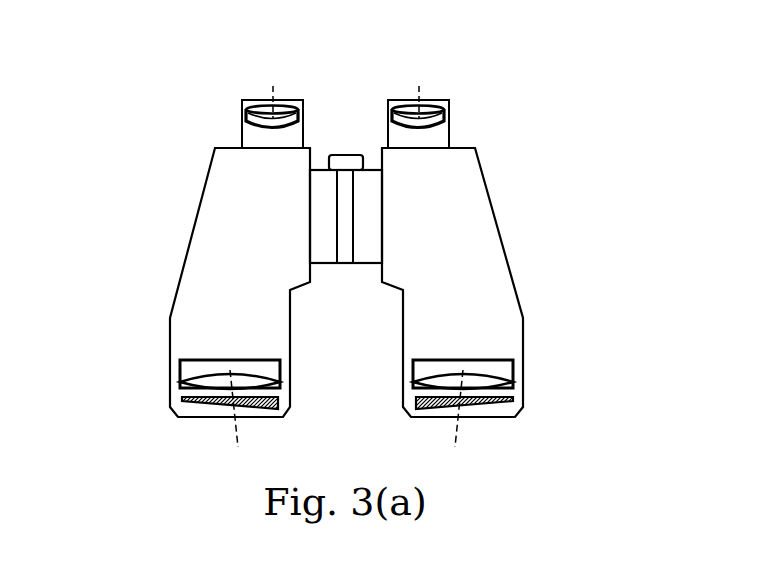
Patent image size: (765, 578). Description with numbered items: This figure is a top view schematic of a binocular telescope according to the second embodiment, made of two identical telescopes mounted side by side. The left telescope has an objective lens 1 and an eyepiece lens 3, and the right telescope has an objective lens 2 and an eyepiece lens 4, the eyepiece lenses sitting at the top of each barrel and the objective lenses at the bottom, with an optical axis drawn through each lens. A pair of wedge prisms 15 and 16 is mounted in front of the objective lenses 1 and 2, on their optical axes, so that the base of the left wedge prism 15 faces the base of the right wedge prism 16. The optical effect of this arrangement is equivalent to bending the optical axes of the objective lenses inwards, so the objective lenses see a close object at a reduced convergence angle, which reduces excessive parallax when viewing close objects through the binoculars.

The objective lens 1 is at (182, 382).
The objective lens 2 is at (513, 371).
The eyepiece lens 3 is at (243, 117).
The eyepiece lens 4 is at (448, 117).
The wedge prism 15 is at (181, 400).
The wedge prism 16 is at (514, 400).